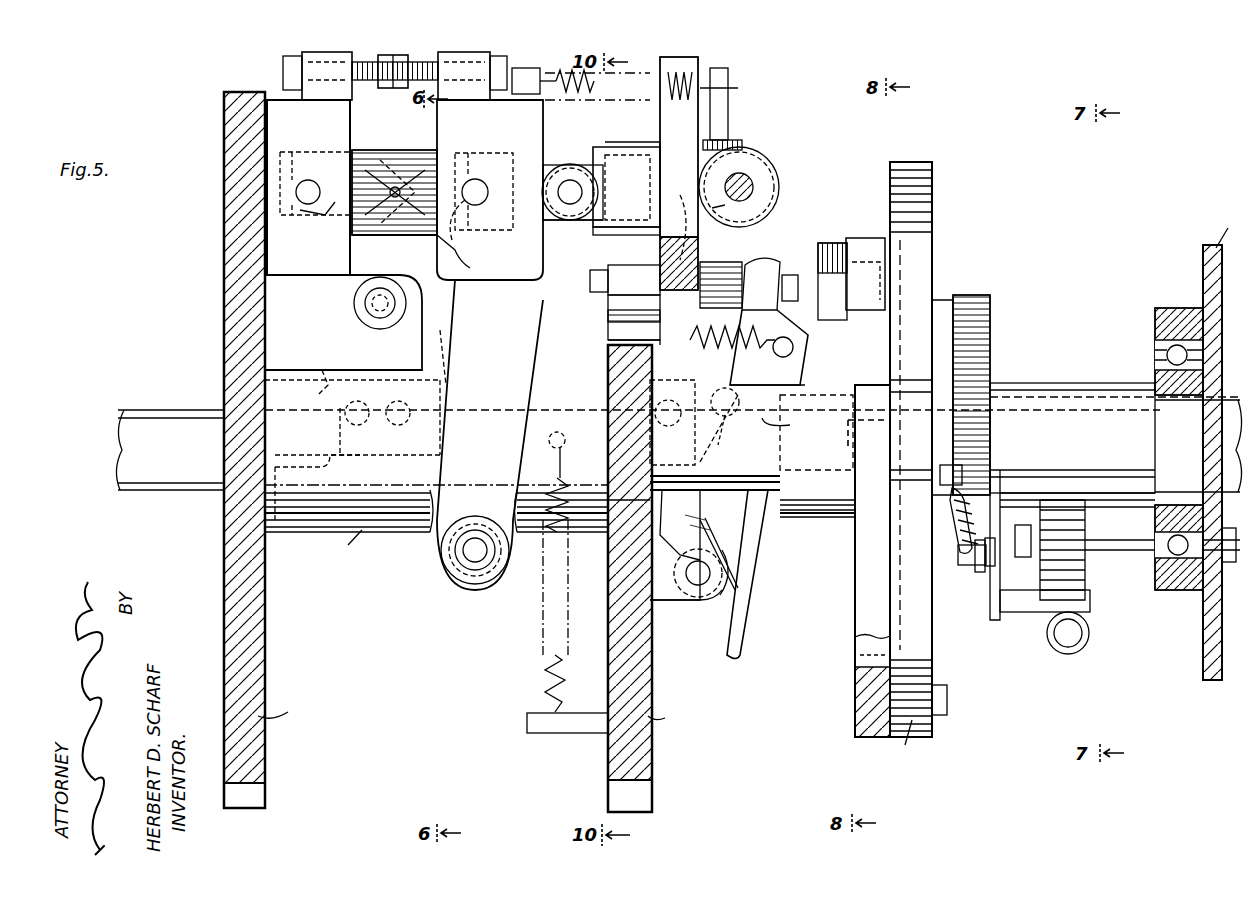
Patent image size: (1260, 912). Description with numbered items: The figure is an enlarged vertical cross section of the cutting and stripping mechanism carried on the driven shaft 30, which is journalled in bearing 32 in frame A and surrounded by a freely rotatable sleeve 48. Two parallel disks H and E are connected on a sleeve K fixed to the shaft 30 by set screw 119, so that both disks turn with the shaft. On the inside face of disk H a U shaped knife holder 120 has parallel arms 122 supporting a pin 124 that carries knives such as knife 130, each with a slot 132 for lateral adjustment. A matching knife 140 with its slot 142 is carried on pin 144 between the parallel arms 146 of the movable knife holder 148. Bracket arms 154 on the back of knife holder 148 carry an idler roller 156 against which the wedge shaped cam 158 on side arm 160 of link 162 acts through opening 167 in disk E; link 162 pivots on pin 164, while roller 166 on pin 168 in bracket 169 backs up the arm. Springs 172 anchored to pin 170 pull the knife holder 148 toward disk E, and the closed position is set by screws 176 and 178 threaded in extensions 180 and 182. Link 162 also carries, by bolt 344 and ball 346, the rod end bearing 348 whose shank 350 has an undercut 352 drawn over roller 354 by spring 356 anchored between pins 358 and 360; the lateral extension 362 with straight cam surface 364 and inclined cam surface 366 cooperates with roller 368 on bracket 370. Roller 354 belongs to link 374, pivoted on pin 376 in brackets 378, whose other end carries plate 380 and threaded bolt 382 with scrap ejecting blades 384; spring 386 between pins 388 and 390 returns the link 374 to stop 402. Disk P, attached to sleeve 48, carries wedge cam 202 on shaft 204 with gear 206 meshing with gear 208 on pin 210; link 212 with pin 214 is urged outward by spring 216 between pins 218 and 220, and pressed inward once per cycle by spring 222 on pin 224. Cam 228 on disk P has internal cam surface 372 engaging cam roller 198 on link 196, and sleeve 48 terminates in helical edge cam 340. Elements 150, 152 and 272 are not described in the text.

The knife holder 120 is at (260, 130).
The parallel arms 122 is at (272, 100).
The pin 124 is at (310, 182).
The knife 130 is at (365, 245).
The slot 132 is at (320, 225).
The knife 140 is at (465, 255).
The slot 142 is at (460, 230).
The pin 144 is at (478, 185).
The parallel arms 146 is at (430, 136).
The movable knife holder 148 is at (540, 300).
The pivot pin 150 is at (470, 555).
The pivot boss 152 is at (470, 590).
The bracket arms 154 is at (553, 220).
The idler roller 156 is at (568, 165).
The wedge shaped cam 158 is at (607, 145).
The side arm 160 is at (690, 122).
The link 162 is at (682, 200).
The pin 164 is at (585, 285).
The roller 166 is at (752, 160).
The opening 167 is at (630, 338).
The pin 168 is at (745, 182).
The bracket 169 is at (734, 211).
The pin 170 is at (730, 75).
The springs 172 is at (590, 98).
The screw 176 is at (404, 90).
The screw 178 is at (372, 82).
The extension 180 is at (474, 88).
The extension 182 is at (322, 92).
The pivotable link 196 is at (818, 310).
The cam roller 198 is at (870, 238).
The wedge cam 202 is at (880, 320).
The shaft 204 is at (930, 310).
The gear 206 is at (990, 305).
The gear 208 is at (1000, 448).
The pin 210 is at (912, 440).
The link 212 is at (1000, 478).
The pin 214 is at (1028, 612).
The spring 216 is at (945, 540).
The pin 218 is at (975, 570).
The pin 220 is at (950, 500).
The spring 222 is at (1090, 640).
The pin 224 is at (1110, 543).
The cam 228 is at (865, 690).
The pawl 272 is at (400, 190).
The driven shaft 30 is at (182, 485).
The bearing 32 is at (1178, 312).
The sleeve 48 is at (1222, 395).
The set screw 119 is at (439, 353).
The helically contoured edge cam 340 is at (790, 425).
The bolt 344 is at (798, 275).
The ball 346 is at (735, 262).
The rod end bearing 348 is at (762, 284).
The shank 350 is at (765, 500).
The undercut portion 352 is at (755, 348).
The roller 354 is at (730, 435).
The spring 356 is at (698, 392).
The pin 358 is at (800, 362).
The pin 360 is at (612, 380).
The lateral extension 362 is at (745, 541).
The straight cam surface 364 is at (645, 500).
The inclined cam surface 366 is at (650, 552).
The roller 368 is at (708, 600).
The bracket 370 is at (662, 600).
The internal cam surface 372 is at (858, 637).
The link 374 is at (740, 470).
The pin 376 is at (672, 422).
The brackets 378 is at (330, 370).
The plate 380 is at (343, 302).
The threaded bolt 382 is at (378, 312).
The scrap ejecting blades 384 is at (380, 245).
The spring 386 is at (545, 668).
The pin 388 is at (565, 438).
The pin 390 is at (580, 733).
The stop 402 is at (320, 480).
The disk H is at (281, 715).
The disk E is at (644, 578).
The frame A is at (1218, 442).
The disk P is at (905, 744).
The sleeve K is at (740, 524).